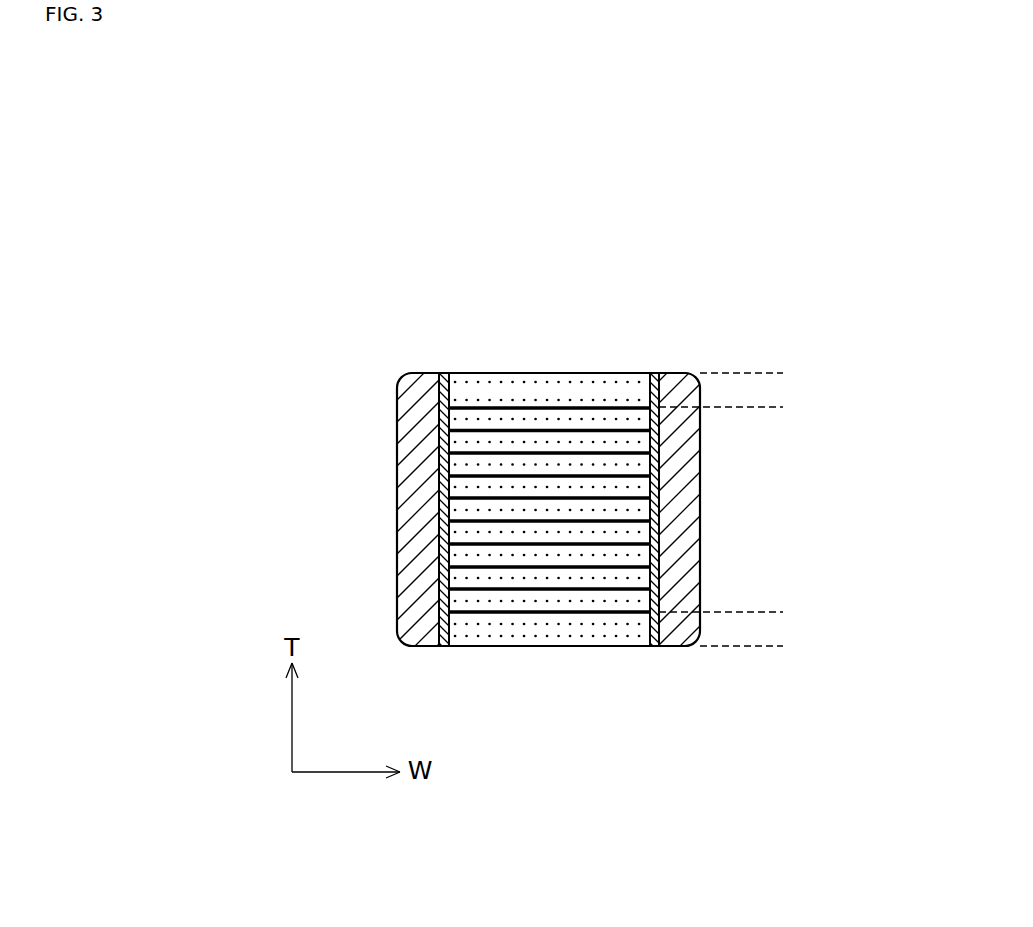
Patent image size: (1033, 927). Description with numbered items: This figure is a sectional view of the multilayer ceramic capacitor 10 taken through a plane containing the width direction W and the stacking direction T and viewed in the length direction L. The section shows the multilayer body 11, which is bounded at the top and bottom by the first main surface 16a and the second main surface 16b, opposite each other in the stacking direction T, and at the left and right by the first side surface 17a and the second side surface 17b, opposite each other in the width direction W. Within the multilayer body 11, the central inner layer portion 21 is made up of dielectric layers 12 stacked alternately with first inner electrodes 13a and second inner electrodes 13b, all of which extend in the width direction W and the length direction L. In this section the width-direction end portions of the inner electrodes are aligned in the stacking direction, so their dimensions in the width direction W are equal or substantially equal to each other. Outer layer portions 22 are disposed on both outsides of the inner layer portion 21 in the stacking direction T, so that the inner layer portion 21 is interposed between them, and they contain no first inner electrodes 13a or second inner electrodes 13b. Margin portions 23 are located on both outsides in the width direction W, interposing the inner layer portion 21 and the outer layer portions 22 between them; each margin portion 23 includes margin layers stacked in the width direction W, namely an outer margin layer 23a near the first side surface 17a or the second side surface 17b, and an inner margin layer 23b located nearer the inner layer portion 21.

The multilayer ceramic capacitor 10 is at (512, 208).
The multilayer body 11 is at (572, 370).
The dielectric layers 12 is at (628, 573).
The first inner electrodes 13a is at (552, 497).
The second inner electrodes 13b is at (503, 523).
The first main surface 16a is at (623, 370).
The second main surface 16b is at (530, 648).
The first side surface 17a is at (397, 482).
The second side surface 17b is at (703, 433).
The inner layer portion 21 is at (790, 407).
The outer layer portions 22 is at (790, 373).
The margin portions 23 is at (343, 244).
The outer margin layer 23a is at (417, 370).
The inner margin layer 23b is at (442, 370).